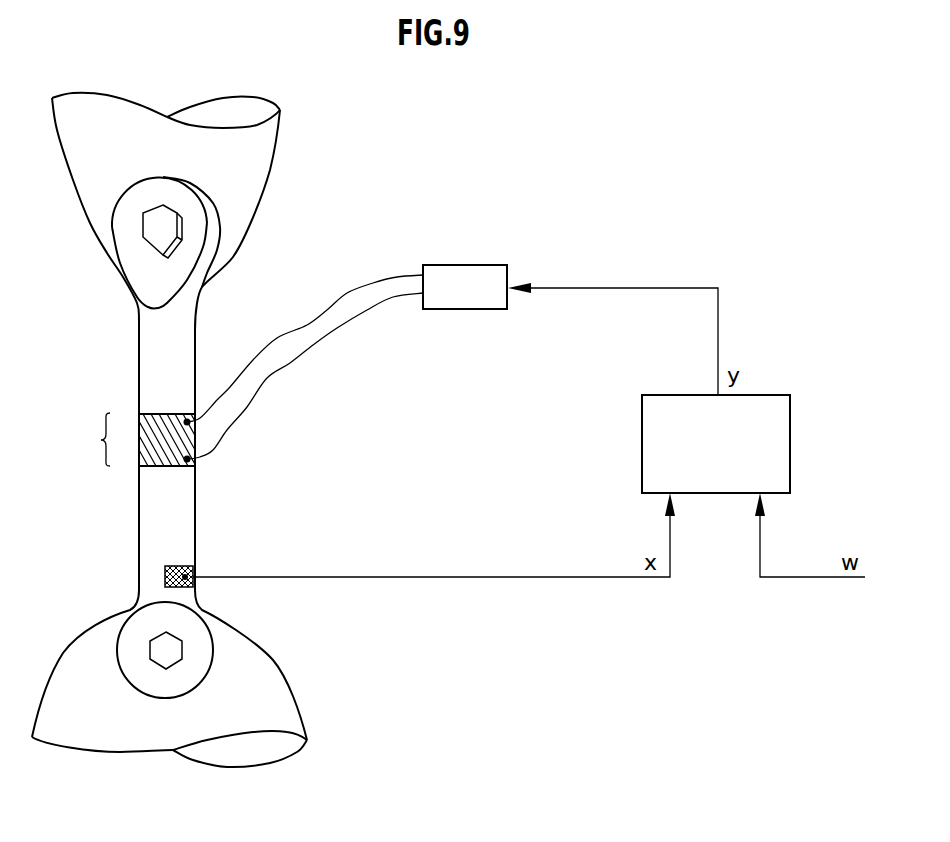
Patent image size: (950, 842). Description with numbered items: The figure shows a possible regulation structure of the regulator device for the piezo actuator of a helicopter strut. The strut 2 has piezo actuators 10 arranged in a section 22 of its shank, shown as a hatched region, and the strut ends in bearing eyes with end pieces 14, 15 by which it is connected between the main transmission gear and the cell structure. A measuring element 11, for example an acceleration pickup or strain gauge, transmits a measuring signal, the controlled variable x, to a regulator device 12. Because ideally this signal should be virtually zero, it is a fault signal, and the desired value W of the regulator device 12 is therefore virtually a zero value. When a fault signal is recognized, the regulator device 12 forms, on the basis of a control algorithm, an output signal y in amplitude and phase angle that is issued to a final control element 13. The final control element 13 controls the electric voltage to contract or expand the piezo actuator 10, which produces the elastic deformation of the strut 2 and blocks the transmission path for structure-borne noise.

The strut 2 is at (95, 311).
The piezo actuator 10 is at (142, 427).
The measuring element 11 is at (178, 567).
The regulator device 12 is at (732, 467).
The final control element 13 is at (480, 301).
The lower bearing cup 14 is at (98, 720).
The upper bearing cup 15 is at (110, 120).
The section 22 is at (90, 439).